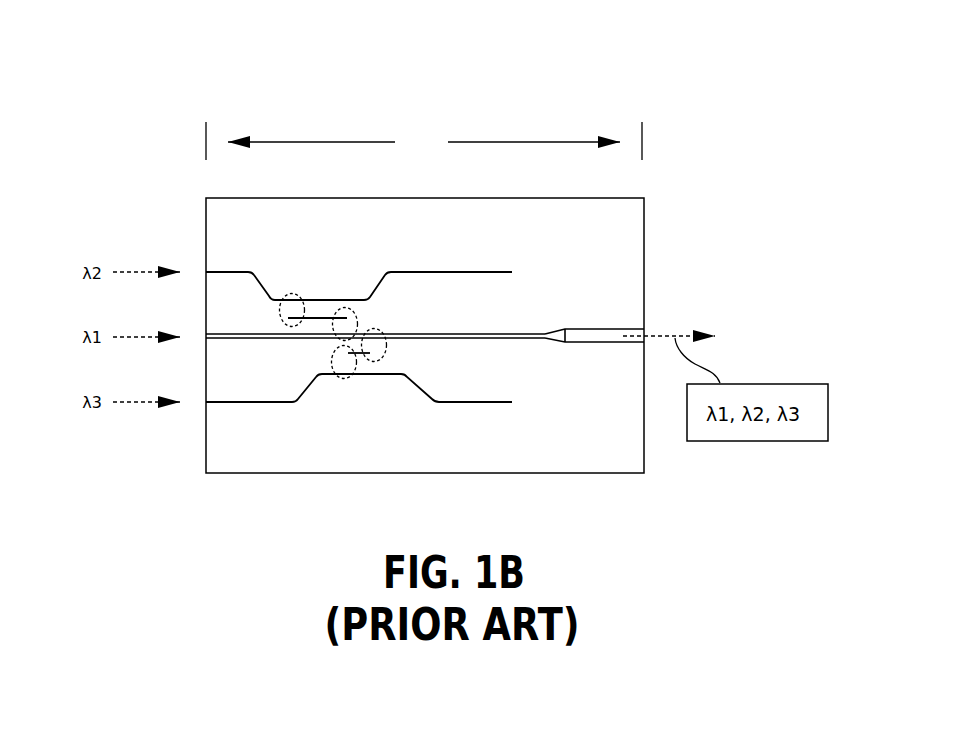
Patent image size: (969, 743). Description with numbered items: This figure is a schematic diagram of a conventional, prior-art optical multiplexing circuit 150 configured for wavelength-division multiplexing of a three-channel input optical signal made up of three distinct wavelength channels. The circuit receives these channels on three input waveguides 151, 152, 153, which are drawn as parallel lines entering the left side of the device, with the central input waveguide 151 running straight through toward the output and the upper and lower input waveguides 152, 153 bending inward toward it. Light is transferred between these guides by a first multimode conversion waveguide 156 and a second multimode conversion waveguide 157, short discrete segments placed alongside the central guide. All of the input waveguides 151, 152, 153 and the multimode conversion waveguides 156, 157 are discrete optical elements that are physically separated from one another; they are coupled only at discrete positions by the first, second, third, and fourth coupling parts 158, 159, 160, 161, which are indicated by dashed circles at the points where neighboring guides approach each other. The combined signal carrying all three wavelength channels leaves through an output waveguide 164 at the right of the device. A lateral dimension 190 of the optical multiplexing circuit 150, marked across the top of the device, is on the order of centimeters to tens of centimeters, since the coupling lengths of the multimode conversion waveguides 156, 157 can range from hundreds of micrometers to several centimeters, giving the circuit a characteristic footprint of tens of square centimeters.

The optical multiplexing circuit 150 is at (813, 62).
The input waveguide 151 is at (231, 334).
The input waveguide 152 is at (225, 272).
The input waveguide 153 is at (260, 402).
The first multimode conversion waveguide 156 is at (322, 315).
The second multimode conversion waveguide 157 is at (360, 353).
The first coupling part 158 is at (291, 296).
The second coupling part 159 is at (357, 318).
The third coupling part 160 is at (344, 379).
The fourth coupling part 161 is at (387, 346).
The output waveguide 164 is at (614, 343).
The lateral dimension 190 is at (424, 141).